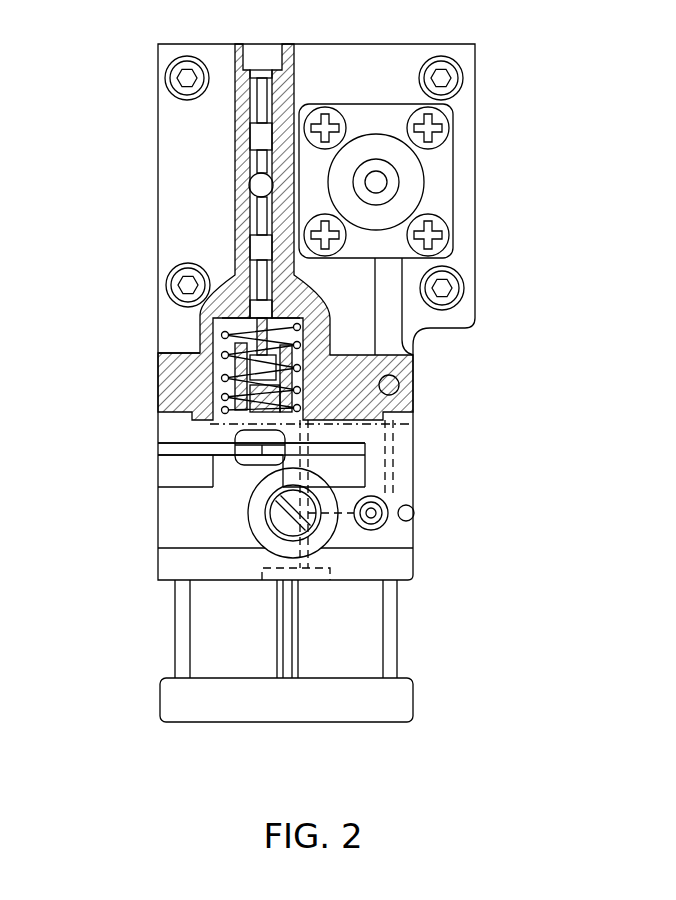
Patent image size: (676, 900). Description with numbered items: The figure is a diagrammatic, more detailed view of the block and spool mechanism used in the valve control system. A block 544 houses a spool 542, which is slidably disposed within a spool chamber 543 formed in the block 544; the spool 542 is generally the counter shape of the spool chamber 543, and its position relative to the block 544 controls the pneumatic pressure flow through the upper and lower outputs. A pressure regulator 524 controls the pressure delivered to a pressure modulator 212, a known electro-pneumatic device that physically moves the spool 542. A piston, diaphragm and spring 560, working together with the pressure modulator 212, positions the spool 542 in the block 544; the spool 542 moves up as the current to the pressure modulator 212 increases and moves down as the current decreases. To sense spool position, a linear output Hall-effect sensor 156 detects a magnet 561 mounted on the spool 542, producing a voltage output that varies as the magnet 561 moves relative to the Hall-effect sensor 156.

The block 544 is at (150, 192).
The pressure regulator 524 is at (433, 174).
The spool chamber 543 is at (272, 90).
The spool 542 is at (248, 136).
The piston, diaphragm and spring 560 is at (211, 396).
The magnet 561 is at (235, 431).
The linear output Hall-effect sensor 156 is at (242, 459).
The pressure modulator 212 is at (213, 648).